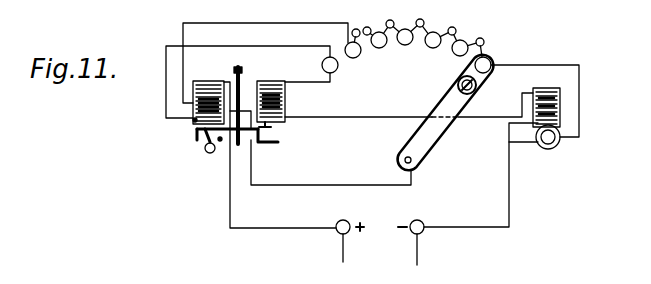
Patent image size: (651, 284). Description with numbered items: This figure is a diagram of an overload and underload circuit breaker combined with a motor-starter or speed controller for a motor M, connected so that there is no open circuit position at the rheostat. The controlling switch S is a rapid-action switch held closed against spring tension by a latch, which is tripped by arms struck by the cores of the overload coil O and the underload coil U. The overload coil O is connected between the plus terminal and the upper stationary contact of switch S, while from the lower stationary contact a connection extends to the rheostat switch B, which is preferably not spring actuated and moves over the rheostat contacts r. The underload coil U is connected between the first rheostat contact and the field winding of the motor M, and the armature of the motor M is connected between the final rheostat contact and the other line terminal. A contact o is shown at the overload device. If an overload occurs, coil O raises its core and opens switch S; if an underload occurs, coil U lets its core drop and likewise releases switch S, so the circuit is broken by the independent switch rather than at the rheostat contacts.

The overload coil O is at (208, 81).
The contact o is at (193, 121).
The controlling switch S is at (241, 73).
The underload coil U is at (285, 98).
The roller chain r is at (357, 29).
The rheostat switch B is at (446, 102).
The motor M is at (546, 88).